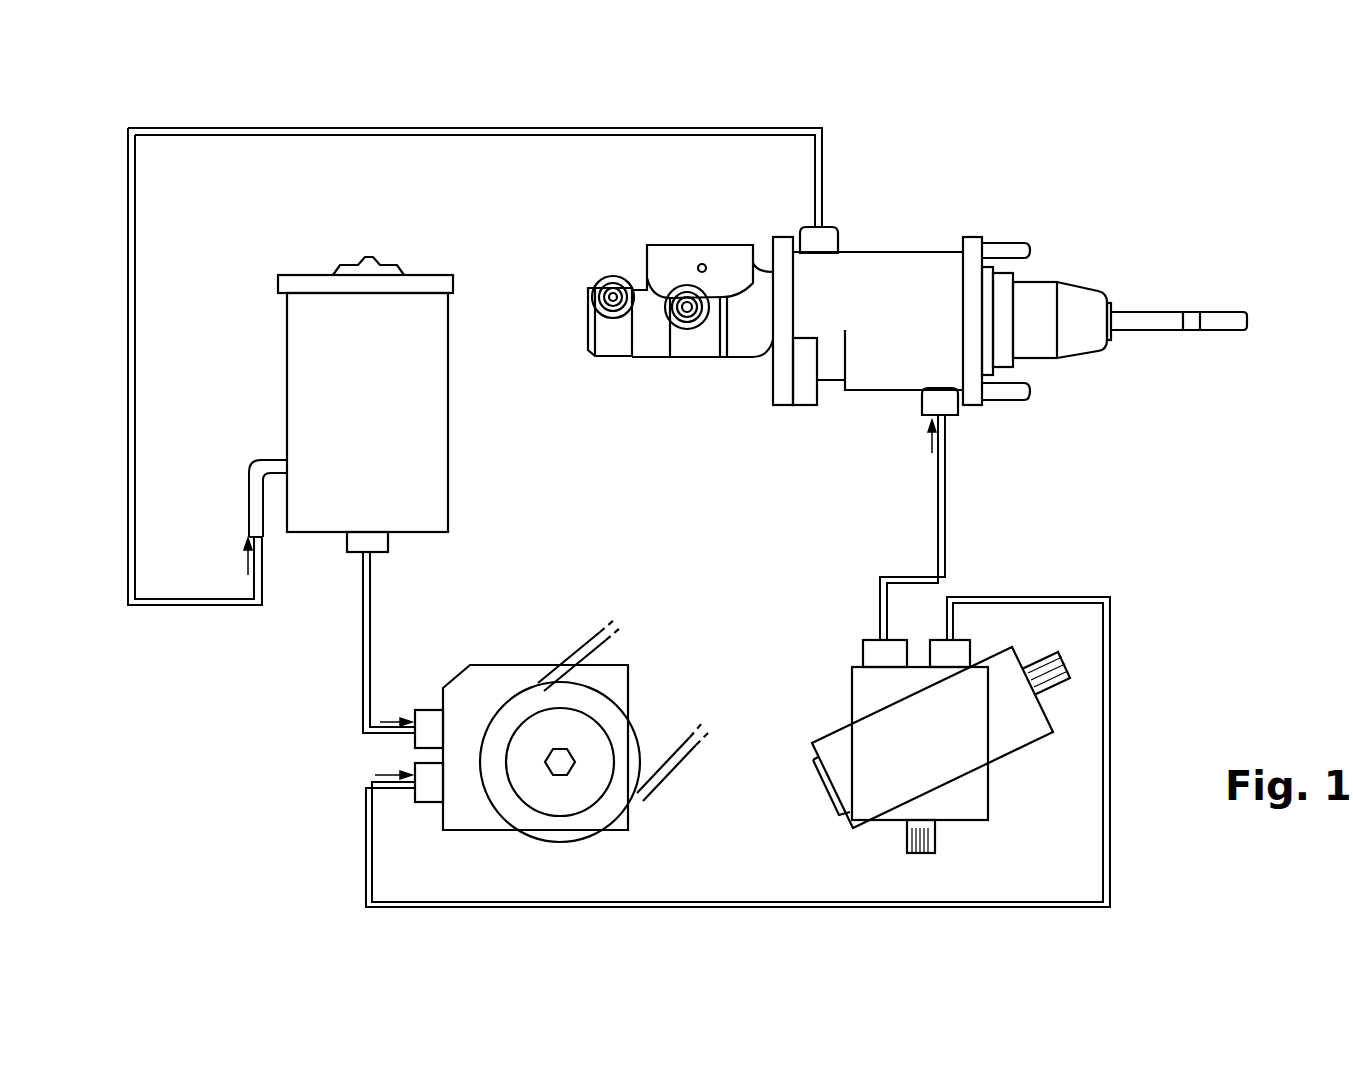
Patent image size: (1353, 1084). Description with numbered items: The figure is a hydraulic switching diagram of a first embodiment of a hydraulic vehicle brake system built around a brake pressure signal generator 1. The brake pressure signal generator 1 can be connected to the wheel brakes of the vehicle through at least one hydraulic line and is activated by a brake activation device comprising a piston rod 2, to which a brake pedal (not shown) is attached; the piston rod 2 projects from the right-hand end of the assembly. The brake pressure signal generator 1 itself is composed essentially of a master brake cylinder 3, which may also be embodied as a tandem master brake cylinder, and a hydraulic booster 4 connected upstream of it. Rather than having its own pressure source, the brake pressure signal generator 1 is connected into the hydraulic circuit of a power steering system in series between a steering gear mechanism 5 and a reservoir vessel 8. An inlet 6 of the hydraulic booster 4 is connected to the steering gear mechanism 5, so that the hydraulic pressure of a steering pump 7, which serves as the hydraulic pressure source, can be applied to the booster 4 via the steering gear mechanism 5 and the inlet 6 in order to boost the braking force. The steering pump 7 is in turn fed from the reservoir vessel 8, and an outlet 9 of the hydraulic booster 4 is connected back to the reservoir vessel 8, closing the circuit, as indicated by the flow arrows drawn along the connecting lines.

The brake pressure signal generator 1 is at (1012, 217).
The piston rod 2 is at (1153, 323).
The master brake cylinder 3 is at (650, 342).
The hydraulic booster 4 is at (880, 372).
The steering gear mechanism 5 is at (872, 687).
The inlet 6 is at (948, 403).
The steering pump 7 is at (493, 683).
The reservoir vessel 8 is at (420, 420).
The outlet 9 is at (827, 242).